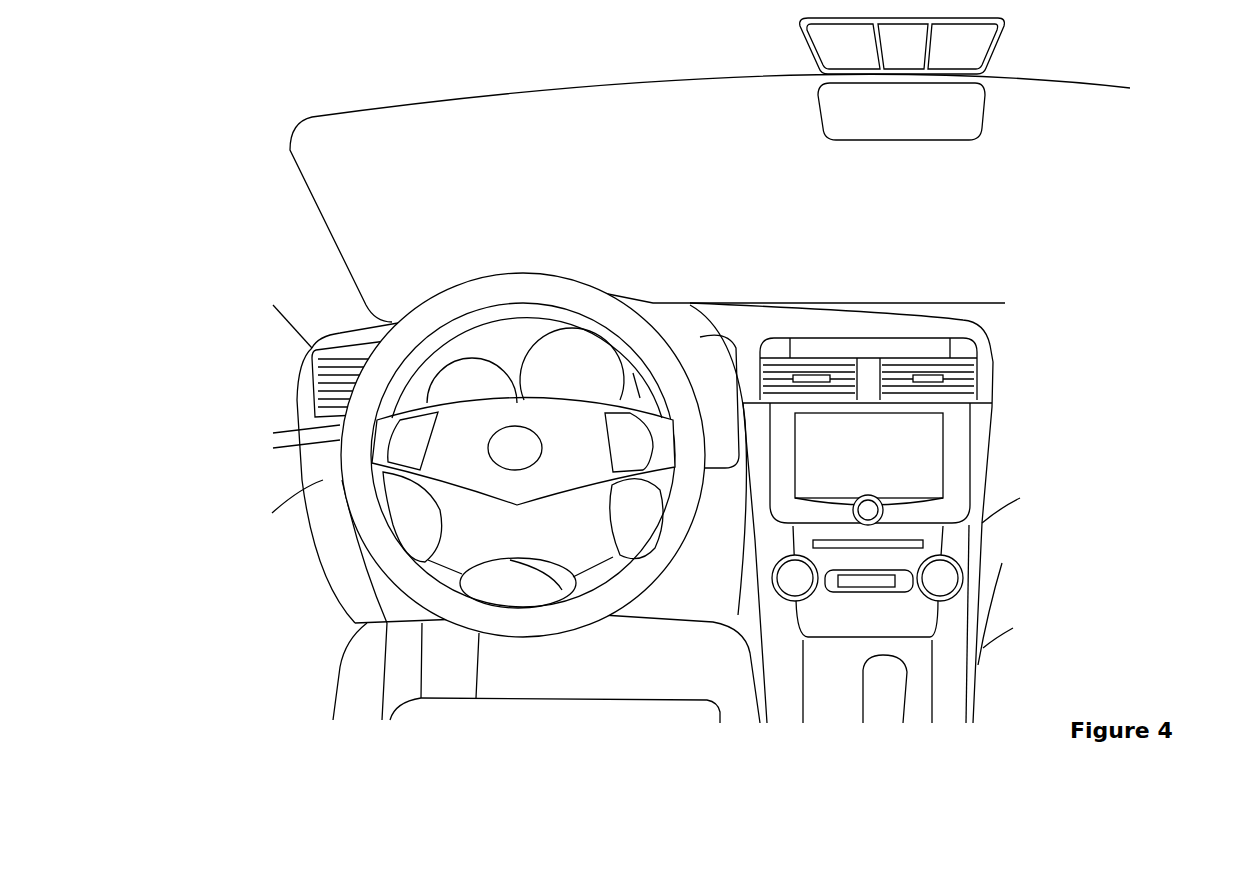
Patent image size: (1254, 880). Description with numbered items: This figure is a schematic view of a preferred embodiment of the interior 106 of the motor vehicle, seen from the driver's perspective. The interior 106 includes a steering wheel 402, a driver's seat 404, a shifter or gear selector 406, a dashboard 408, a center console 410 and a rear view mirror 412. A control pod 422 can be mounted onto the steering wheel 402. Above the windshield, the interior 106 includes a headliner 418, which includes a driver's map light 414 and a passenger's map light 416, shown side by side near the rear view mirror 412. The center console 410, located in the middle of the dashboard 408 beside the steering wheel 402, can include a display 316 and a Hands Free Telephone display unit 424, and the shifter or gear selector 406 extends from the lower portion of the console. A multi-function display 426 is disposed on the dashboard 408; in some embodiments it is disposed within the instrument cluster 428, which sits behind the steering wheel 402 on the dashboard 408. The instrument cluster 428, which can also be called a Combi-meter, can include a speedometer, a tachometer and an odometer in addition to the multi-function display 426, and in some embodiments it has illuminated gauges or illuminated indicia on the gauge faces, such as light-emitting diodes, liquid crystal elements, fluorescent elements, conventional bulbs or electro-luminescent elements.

The interior 106 is at (268, 138).
The headliner 418 is at (563, 42).
The driver's map light 414 is at (823, 42).
The passenger's map light 416 is at (975, 50).
The rear view mirror 412 is at (957, 142).
The dashboard 408 is at (688, 330).
The driver's seat 404 is at (625, 665).
The center console 410 is at (978, 437).
The Hands Free Telephone display unit 424 is at (915, 340).
The display 316 is at (892, 470).
The shifter or gear selector 406 is at (880, 693).
The steering wheel 402 is at (483, 292).
The control pod 422 is at (425, 505).
The instrument cluster 428 is at (518, 330).
The multi-function display 426 is at (632, 397).